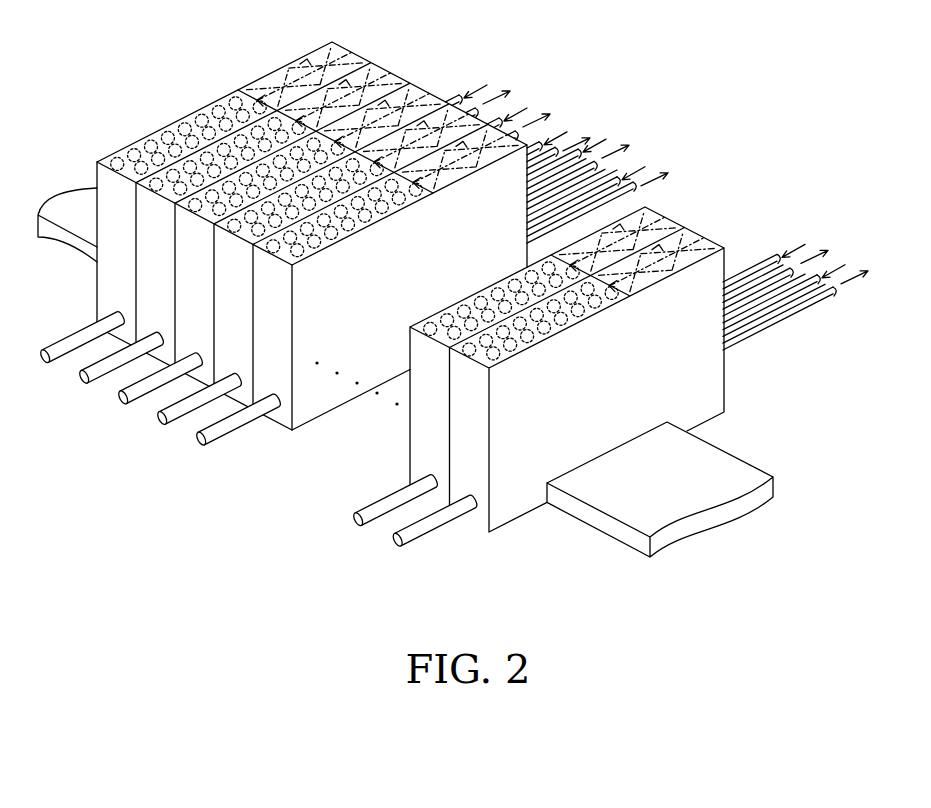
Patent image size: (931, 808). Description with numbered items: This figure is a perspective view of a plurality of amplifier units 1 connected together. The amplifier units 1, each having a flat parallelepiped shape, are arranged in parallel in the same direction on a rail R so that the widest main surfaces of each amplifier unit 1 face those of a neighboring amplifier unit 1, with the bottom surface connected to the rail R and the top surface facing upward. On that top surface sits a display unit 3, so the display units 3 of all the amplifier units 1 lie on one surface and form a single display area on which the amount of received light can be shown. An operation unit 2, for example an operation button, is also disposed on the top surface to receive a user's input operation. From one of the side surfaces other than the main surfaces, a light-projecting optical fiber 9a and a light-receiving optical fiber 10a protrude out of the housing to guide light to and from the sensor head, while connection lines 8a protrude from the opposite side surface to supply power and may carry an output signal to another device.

The amplifier unit 1 is at (350, 53).
The operation unit 2 is at (673, 275).
The display unit 3 is at (560, 331).
The connection lines 8a is at (421, 534).
The light-projecting optical fiber 9a is at (795, 308).
The light-receiving optical fiber 10a is at (750, 317).
The rail R is at (722, 460).